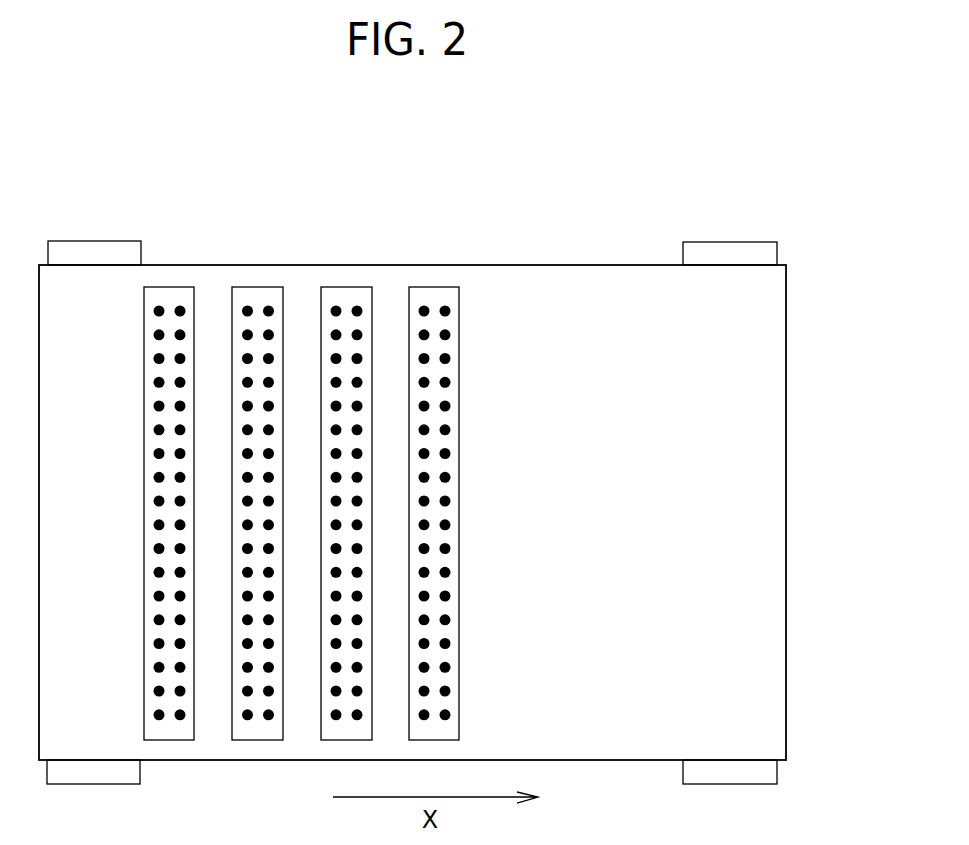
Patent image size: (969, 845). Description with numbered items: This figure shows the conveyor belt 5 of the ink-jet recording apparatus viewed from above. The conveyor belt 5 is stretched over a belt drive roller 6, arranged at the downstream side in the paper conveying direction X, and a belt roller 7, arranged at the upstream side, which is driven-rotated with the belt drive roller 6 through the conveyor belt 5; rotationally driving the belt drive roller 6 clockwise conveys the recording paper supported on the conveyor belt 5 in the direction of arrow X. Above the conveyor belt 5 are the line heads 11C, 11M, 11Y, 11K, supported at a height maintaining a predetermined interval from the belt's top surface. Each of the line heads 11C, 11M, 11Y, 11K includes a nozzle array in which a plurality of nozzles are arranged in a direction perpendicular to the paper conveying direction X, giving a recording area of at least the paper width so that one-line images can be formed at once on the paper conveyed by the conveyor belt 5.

The conveyor belt 5 is at (772, 694).
The belt drive roller 6 is at (731, 255).
The belt roller 7 is at (95, 255).
The line head 11C is at (174, 293).
The line head 11M is at (256, 293).
The line head 11Y is at (349, 292).
The line head 11K is at (438, 293).